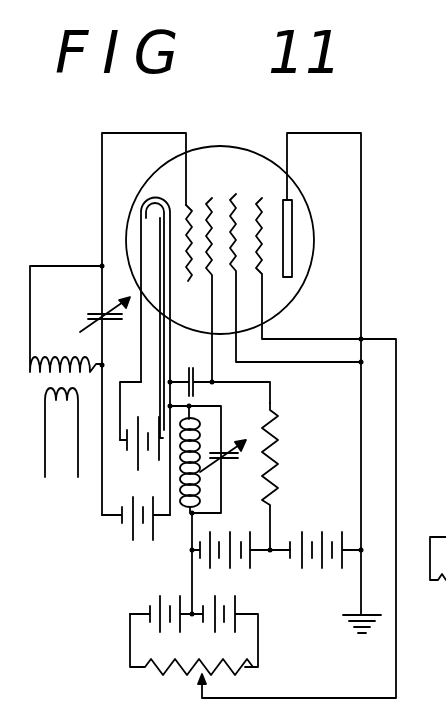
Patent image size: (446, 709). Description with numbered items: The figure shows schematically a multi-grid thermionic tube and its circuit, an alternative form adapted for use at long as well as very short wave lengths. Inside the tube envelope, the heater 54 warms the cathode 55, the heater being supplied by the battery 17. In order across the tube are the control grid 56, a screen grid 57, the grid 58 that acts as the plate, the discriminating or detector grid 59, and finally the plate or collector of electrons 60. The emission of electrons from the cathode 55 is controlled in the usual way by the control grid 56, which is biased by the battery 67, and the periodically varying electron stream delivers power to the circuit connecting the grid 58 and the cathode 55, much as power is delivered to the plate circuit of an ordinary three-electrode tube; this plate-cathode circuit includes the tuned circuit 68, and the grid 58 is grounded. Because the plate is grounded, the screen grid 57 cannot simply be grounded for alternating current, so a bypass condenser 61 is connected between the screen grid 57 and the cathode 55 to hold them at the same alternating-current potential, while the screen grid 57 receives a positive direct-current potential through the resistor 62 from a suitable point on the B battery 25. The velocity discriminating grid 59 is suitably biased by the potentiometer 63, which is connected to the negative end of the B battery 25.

The battery 17 is at (139, 468).
The B battery 25 is at (325, 510).
The heater 54 is at (141, 218).
The cathode 55 is at (155, 197).
The control grid 56 is at (188, 208).
The screen grid 57 is at (211, 202).
The grid that acts as the plate 58 is at (236, 196).
The discriminating or detector grid 59 is at (262, 200).
The plate or collector of electrons 60 is at (297, 218).
The bypass condenser 61 is at (193, 350).
The resistor 62 is at (278, 428).
The potentiometer 63 is at (180, 680).
The battery 67 is at (122, 520).
The tuned circuit 68 is at (208, 459).